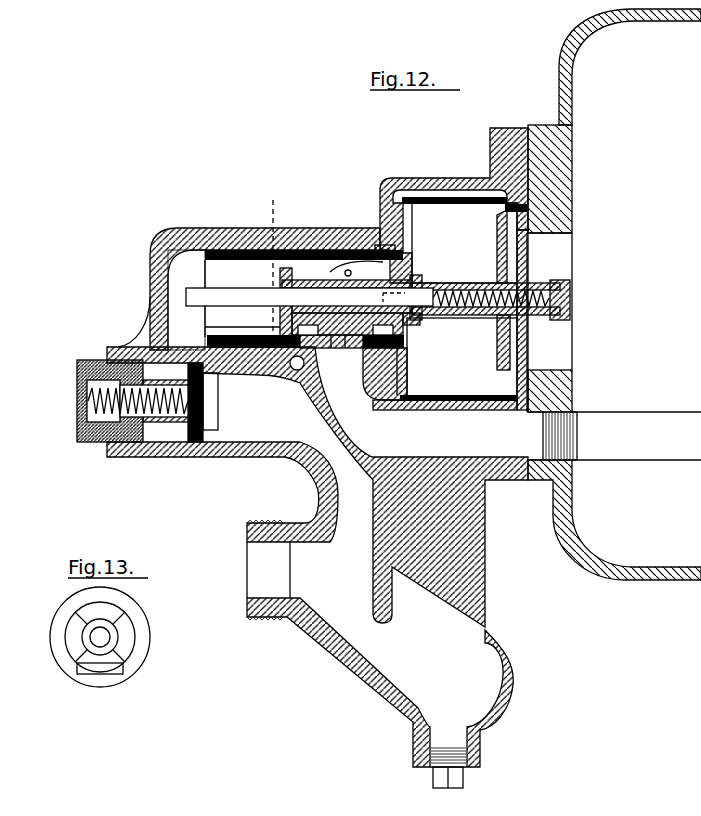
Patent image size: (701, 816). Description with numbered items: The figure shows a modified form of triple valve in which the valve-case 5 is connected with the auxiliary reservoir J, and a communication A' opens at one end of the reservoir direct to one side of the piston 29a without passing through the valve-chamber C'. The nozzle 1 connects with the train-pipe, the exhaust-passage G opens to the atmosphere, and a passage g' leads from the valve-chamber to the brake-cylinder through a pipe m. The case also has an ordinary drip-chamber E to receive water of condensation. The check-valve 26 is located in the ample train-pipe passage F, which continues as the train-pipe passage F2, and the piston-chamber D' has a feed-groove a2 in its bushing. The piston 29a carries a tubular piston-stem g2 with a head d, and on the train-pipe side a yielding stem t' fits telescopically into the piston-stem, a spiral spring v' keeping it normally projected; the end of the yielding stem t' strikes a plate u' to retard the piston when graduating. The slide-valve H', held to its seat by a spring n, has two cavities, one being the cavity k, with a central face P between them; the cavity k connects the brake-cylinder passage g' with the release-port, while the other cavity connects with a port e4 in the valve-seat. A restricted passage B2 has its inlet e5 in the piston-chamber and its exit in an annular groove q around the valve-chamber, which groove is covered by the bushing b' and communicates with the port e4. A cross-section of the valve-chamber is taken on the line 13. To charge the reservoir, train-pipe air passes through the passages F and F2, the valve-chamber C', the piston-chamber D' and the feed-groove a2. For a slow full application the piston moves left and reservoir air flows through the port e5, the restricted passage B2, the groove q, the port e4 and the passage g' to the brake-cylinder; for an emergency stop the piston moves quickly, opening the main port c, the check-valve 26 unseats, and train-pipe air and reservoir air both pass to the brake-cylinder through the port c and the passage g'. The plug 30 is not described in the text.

In FIG. 12, the auxiliary reservoir J is at (580, 40).
In FIG. 12, the communication A' is at (564, 268).
In FIG. 12, the pipe m is at (663, 424).
In FIG. 12, the feed-groove a2 is at (514, 416).
In FIG. 12, the piston 29a is at (511, 358).
In FIG. 12, the valve-case 5 is at (330, 233).
In FIG. 12, the restricted passage B2 is at (433, 192).
In FIG. 12, the inlet port e5 is at (514, 206).
In FIG. 12, the spiral spring v' is at (488, 290).
In FIG. 12, the annular groove q is at (380, 246).
In FIG. 12, the bushing b' is at (304, 274).
In FIG. 13, the bushing b' is at (112, 637).
In FIG. 12, the section line 13 is at (271, 258).
In FIG. 12, the plate u' is at (142, 310).
In FIG. 12, the train-pipe passage F2 is at (186, 300).
In FIG. 12, the valve-chamber C' is at (298, 298).
In FIG. 13, the valve-chamber C' is at (78, 638).
In FIG. 12, the spring n is at (343, 263).
In FIG. 12, the slide-valve H' is at (364, 328).
In FIG. 12, the head d is at (284, 316).
In FIG. 13, the head d is at (80, 620).
In FIG. 12, the cavity k is at (313, 331).
In FIG. 12, the main port c is at (333, 342).
In FIG. 12, the central face P is at (345, 340).
In FIG. 12, the port e4 is at (375, 350).
In FIG. 12, the piston-stem g2 is at (456, 290).
In FIG. 12, the yielding stem t' is at (308, 285).
In FIG. 13, the yielding stem t' is at (106, 637).
In FIG. 12, the piston-chamber D' is at (445, 364).
In FIG. 12, the passage g' is at (317, 487).
In FIG. 12, the exhaust-passage G is at (297, 371).
In FIG. 12, the train-pipe passage F is at (222, 492).
In FIG. 12, the drip-chamber E is at (380, 693).
In FIG. 12, the nozzle 1 is at (258, 568).
In FIG. 12, the plug 30 is at (89, 368).
In FIG. 12, the check-valve 26 is at (206, 406).